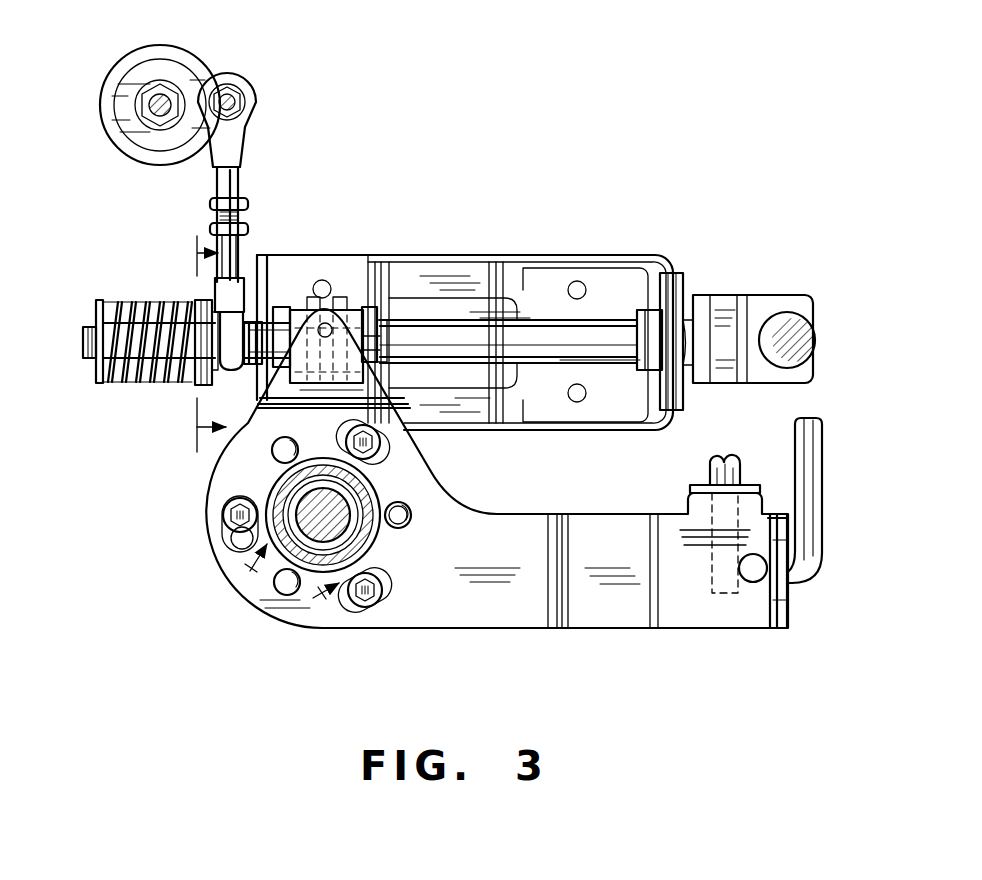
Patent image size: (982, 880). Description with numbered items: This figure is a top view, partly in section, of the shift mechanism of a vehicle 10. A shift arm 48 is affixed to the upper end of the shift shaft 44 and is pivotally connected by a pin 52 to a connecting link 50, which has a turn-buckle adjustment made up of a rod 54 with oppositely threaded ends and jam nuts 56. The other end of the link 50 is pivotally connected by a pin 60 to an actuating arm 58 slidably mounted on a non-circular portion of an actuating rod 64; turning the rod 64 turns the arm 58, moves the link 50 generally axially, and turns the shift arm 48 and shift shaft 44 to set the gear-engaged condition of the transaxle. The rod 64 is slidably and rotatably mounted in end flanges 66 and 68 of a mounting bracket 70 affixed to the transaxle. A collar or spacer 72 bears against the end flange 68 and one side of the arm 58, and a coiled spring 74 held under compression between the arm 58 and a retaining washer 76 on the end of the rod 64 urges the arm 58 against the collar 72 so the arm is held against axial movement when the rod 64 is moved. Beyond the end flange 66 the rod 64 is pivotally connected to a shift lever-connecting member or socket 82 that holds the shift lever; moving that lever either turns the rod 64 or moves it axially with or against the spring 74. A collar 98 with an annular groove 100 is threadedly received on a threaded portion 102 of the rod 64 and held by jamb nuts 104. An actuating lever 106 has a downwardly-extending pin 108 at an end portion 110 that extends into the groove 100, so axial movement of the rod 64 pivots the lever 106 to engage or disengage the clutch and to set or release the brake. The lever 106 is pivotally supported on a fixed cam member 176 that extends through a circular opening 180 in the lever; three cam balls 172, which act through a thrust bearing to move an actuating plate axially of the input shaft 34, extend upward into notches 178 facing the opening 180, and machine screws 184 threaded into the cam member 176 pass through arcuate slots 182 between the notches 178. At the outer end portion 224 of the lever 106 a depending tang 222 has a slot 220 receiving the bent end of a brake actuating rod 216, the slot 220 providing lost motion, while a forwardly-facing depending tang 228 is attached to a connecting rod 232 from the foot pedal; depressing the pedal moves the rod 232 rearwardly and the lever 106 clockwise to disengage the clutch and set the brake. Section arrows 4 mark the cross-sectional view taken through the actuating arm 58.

The section line 4- 4 is at (196, 342).
The vehicle 10 is at (286, 584).
The input shaft 34 is at (307, 510).
The shift shaft 44 is at (155, 107).
The shift arm 48 is at (183, 71).
The connecting link 50 is at (242, 170).
The pin 52 is at (232, 104).
The rod 54 is at (242, 226).
The jam nuts 56 is at (212, 228).
The actuating arm 58 is at (193, 381).
The pin 60 is at (288, 316).
The actuating rod 64 is at (452, 318).
The end flange 66 is at (670, 286).
The end flange 68 is at (259, 262).
The mounting bracket 70 is at (398, 251).
The collar or spacer 72 is at (240, 305).
The coiled spring 74 is at (130, 310).
The retaining washer 76 is at (95, 314).
The shift lever-connecting member or socket 82 is at (800, 293).
The collar 98 is at (343, 302).
The annular groove 100 is at (317, 282).
The threaded portion 102 is at (380, 319).
The jamb nuts 104 is at (335, 390).
The actuating lever 106 is at (410, 634).
The downwardly-extending pin 108 is at (366, 346).
The end portion 110 is at (383, 374).
The cam balls 172 is at (412, 518).
The cam member 176 is at (378, 548).
The notches 178 is at (270, 453).
The circular opening 180 is at (364, 480).
The arcuate slots 182 is at (238, 540).
The machine screws 184 is at (232, 509).
The brake actuating rod 216 is at (800, 454).
The slot 220 is at (790, 587).
The depending tang 222 is at (787, 620).
The outer end portion 224 is at (743, 630).
The forwardly-facing depending tang 228 is at (700, 484).
The connecting rod 232 is at (712, 466).